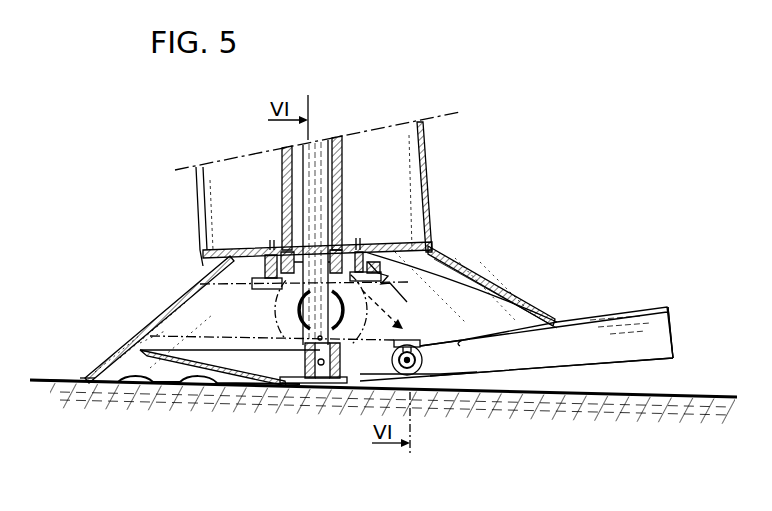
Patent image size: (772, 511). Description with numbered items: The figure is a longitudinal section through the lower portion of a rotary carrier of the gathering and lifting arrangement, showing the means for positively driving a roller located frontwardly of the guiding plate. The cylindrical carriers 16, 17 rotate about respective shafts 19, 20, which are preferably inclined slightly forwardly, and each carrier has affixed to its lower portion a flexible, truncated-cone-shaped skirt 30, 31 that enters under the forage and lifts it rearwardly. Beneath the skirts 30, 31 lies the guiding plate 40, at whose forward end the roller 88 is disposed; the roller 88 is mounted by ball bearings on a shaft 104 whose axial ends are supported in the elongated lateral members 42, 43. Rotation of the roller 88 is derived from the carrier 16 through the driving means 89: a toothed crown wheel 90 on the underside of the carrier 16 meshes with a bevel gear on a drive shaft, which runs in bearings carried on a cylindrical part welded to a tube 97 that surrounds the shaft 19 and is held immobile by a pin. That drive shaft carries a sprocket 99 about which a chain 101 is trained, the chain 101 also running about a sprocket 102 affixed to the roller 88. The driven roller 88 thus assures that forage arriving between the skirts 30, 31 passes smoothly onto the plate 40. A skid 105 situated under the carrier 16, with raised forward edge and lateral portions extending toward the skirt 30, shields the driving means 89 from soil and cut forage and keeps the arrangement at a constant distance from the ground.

The cylindrical carrier 16 is at (364, 189).
The cylindrical carrier 17 is at (432, 184).
The shaft 19 is at (350, 212).
The shaft 20 is at (330, 148).
The flexible deformable skirt 30 is at (132, 319).
The flexible deformable skirt 31 is at (183, 332).
The guiding plate 40 is at (620, 312).
The elongated lateral member 42 is at (551, 386).
The elongated lateral member 43 is at (592, 353).
The roller 88 is at (458, 372).
The driving means 89 is at (266, 315).
The toothed crown wheel 90 is at (228, 264).
The tube 97 is at (277, 385).
The sprocket 99 is at (433, 262).
The chain 101 is at (400, 330).
The sprocket 102 is at (415, 372).
The shaft 104 is at (419, 380).
The skid 105 is at (233, 362).